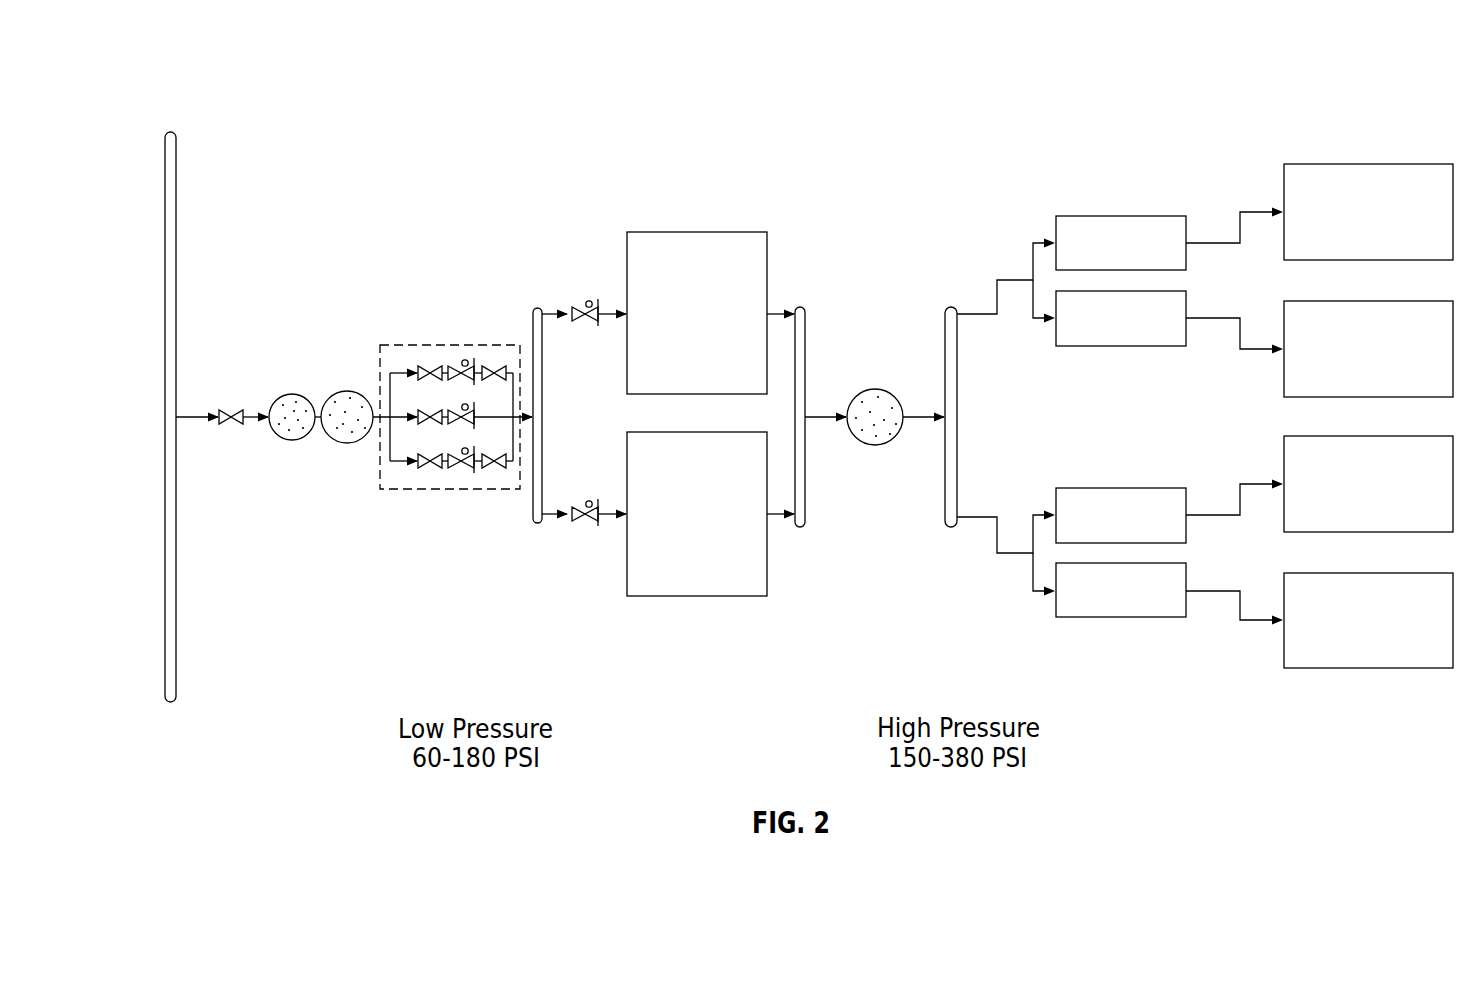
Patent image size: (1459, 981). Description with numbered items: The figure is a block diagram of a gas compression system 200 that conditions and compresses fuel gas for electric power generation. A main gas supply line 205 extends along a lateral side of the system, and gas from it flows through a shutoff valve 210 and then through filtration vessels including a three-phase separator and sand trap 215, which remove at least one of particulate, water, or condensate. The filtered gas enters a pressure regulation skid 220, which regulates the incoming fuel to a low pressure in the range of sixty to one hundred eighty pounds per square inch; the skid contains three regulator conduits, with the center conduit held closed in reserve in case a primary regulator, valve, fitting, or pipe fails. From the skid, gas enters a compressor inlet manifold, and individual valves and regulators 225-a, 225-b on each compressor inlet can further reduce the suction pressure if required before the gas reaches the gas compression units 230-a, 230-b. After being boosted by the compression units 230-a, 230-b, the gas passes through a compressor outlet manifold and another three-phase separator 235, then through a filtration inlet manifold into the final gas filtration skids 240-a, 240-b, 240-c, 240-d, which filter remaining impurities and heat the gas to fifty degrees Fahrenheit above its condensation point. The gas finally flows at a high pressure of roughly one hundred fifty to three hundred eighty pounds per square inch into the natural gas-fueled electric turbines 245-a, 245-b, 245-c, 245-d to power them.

The gas compression system 200 is at (182, 41).
The main gas supply line 205 is at (165, 210).
The shutoff valve 210 is at (228, 424).
The three-phase separator and sand trap 215 is at (315, 369).
The pressure regulation skid 220 is at (425, 334).
The valve and regulator 225-a is at (575, 309).
The valve and regulator 225-b is at (575, 523).
The gas compression unit 230-a is at (730, 328).
The gas compression unit 230-b is at (730, 529).
The three-phase separator 235 is at (869, 446).
The gas filtration skid 240-a is at (1153, 258).
The gas filtration skid 240-b is at (1153, 333).
The gas filtration skid 240-c is at (1153, 530).
The gas filtration skid 240-d is at (1153, 605).
The natural gas-fueled electric turbine 245-a is at (1402, 227).
The natural gas-fueled electric turbine 245-b is at (1402, 364).
The natural gas-fueled electric turbine 245-c is at (1402, 499).
The natural gas-fueled electric turbine 245-d is at (1402, 635).